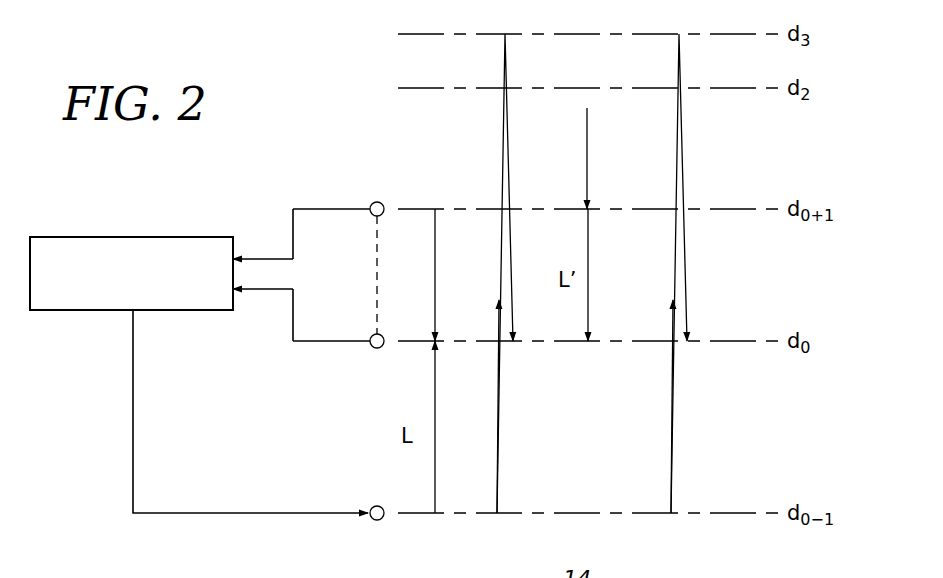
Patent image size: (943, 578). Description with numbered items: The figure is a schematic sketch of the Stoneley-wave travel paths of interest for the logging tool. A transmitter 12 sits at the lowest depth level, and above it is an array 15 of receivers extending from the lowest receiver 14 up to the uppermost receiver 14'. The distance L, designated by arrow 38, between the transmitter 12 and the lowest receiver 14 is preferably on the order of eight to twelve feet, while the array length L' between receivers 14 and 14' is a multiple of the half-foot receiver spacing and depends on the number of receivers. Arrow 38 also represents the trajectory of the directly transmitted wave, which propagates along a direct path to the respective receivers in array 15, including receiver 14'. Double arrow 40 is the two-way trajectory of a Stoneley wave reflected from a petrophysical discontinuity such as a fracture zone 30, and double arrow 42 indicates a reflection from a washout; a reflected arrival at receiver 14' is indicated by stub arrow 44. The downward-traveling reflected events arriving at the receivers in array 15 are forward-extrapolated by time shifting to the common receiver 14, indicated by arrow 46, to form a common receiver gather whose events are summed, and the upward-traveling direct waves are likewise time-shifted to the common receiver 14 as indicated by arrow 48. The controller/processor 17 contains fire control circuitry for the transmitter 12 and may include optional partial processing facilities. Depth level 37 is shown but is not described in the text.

The transmitter 12 is at (376, 506).
The lowest receiver 14 is at (338, 373).
The receiver 14' is at (338, 182).
The array 15 is at (377, 268).
The controller/processor 17 is at (105, 237).
The fracture zone 30 is at (400, 34).
The distance line d2 37 is at (400, 88).
The arrow 38 is at (436, 406).
The double arrow 40 is at (495, 446).
The double arrow 42 is at (669, 446).
The stub arrow 44 is at (588, 129).
The arrow 46 is at (589, 253).
The arrow 48 is at (436, 253).